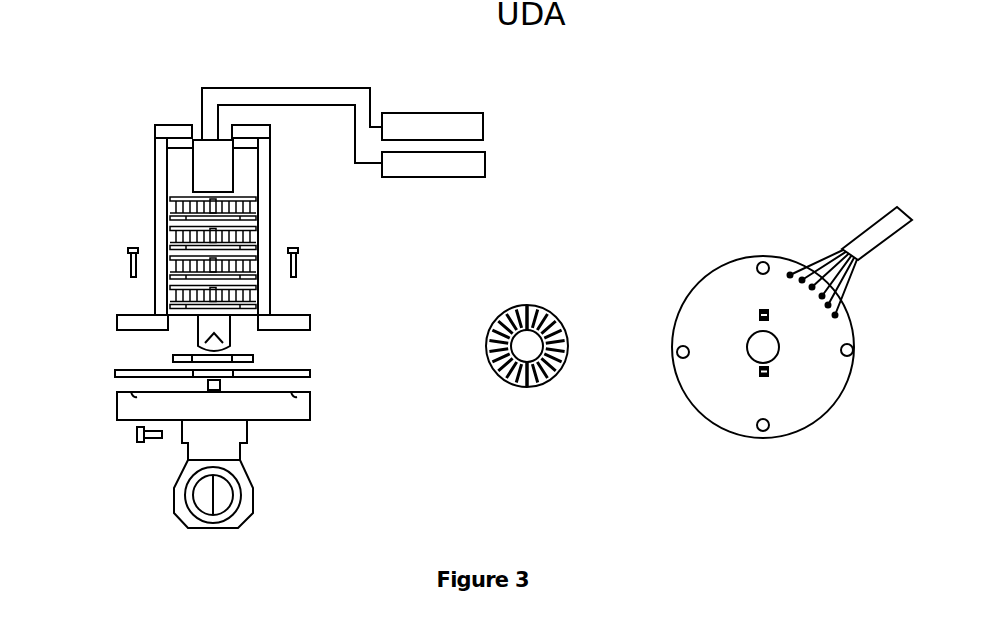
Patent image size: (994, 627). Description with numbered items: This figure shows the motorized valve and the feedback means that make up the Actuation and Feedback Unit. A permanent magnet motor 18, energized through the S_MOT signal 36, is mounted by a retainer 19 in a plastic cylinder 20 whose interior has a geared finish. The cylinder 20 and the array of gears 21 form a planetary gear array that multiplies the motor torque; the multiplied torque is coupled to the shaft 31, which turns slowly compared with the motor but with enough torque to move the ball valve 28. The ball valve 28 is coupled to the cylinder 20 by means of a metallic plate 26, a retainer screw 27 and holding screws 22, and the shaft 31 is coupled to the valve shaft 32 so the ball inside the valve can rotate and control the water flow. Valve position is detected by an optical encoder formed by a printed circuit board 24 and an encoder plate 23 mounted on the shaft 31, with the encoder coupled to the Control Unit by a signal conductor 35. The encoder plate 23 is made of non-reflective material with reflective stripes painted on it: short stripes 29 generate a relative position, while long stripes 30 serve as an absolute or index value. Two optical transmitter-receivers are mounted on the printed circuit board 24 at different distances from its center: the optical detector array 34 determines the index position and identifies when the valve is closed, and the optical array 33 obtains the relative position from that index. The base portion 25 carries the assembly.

The motor 18 is at (207, 157).
The retainer 19 is at (143, 127).
The cylinder 20 is at (275, 162).
The array of gears 21 is at (242, 195).
The holding screws 22 is at (308, 270).
The encoder plate 23 is at (172, 358).
The printed circuit board 24 is at (113, 373).
The base 25 is at (113, 398).
The metallic plate 26 is at (255, 425).
The retainer screw 27 is at (140, 448).
The ball valve 28 is at (172, 527).
The short stripes 29 is at (517, 387).
The long stripes 30 is at (530, 388).
The shaft 31 is at (235, 328).
The valve shaft 32 is at (225, 385).
The optical transmitter-receiver 33 is at (755, 305).
The optical detector array 34 is at (755, 377).
The signal conductor 35 is at (848, 228).
The S_MOT 36 is at (490, 160).